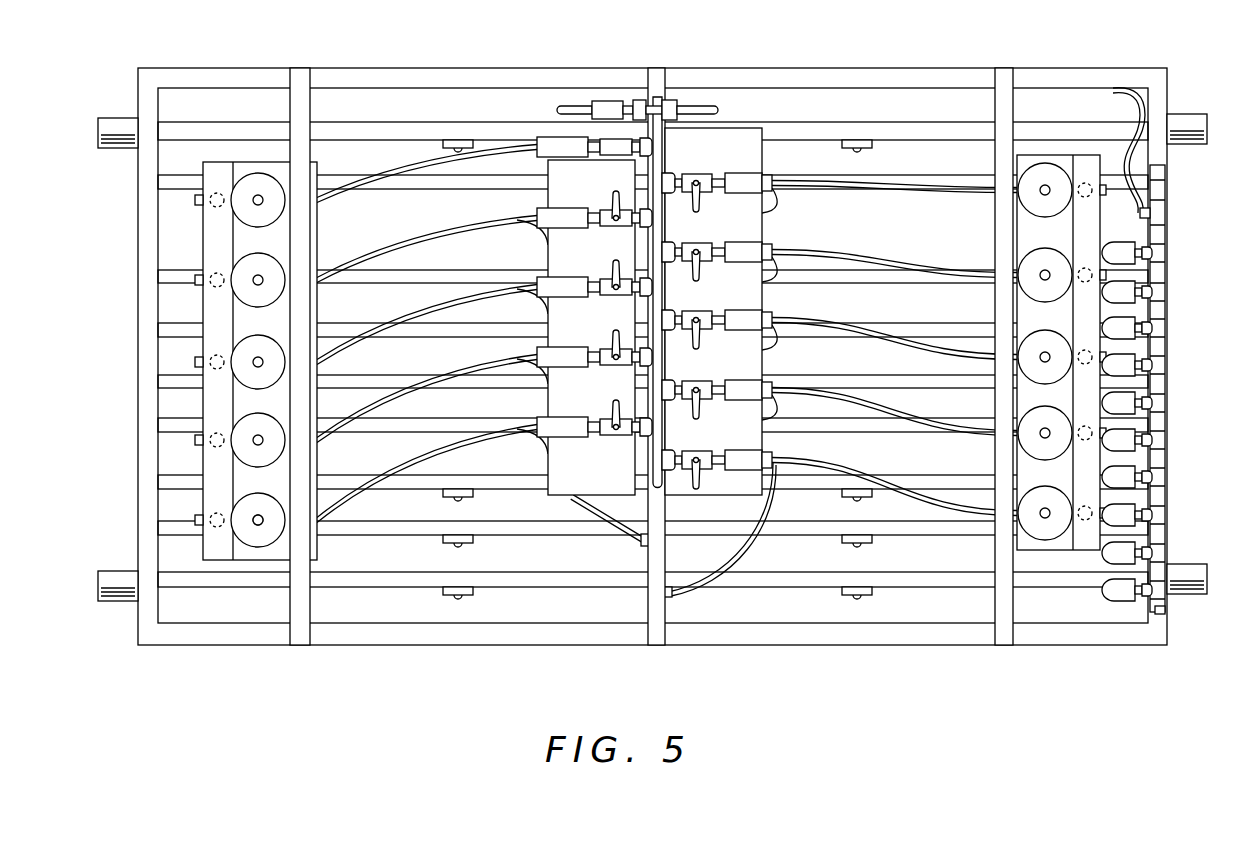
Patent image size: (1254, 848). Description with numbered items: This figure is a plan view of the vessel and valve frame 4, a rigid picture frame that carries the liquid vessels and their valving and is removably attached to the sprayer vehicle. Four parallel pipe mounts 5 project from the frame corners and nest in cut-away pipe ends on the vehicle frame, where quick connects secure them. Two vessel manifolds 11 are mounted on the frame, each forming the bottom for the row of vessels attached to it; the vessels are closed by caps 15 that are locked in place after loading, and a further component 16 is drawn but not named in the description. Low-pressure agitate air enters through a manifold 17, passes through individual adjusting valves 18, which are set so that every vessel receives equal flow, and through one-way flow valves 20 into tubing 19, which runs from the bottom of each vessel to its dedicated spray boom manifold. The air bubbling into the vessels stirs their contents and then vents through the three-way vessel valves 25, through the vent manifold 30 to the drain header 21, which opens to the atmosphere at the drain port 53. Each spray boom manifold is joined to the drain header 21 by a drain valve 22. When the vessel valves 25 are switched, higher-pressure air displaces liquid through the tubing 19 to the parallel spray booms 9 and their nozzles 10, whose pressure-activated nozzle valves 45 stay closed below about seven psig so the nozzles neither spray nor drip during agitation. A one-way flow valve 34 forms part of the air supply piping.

The vessel and valve frame 4 is at (746, 58).
The pipe mounts 5 is at (105, 124).
The spray booms 9 is at (873, 572).
The nozzles 10 is at (860, 591).
The vessel manifolds 11 is at (250, 164).
The caps 15 is at (274, 195).
The roller shaft 16 is at (259, 516).
The manifold 17 is at (668, 230).
The adjusting valves 18 is at (698, 181).
The tubing 19 is at (745, 553).
The flow valves 20 is at (560, 146).
The drain header 21 is at (1168, 479).
The drain valve 22 is at (1116, 597).
The vessel valve 25 is at (205, 172).
The vent manifold 30 is at (203, 463).
The one-way flow valve 34 is at (607, 106).
The nozzle valves 45 is at (470, 596).
The drain port 53 is at (1166, 612).